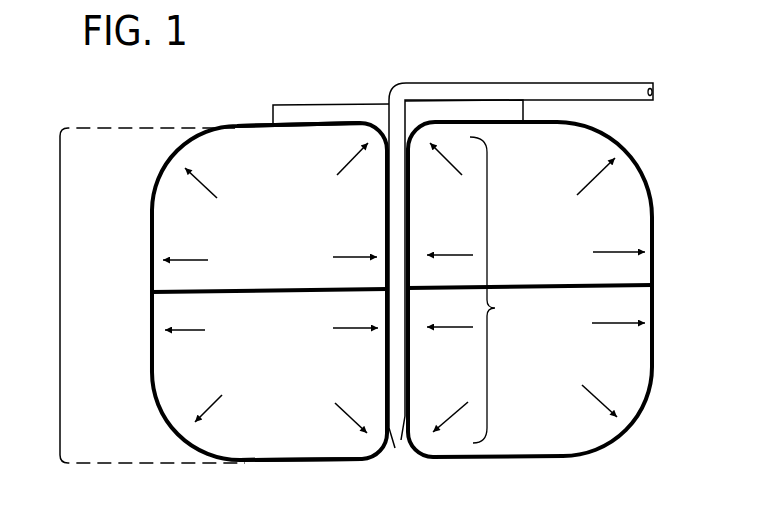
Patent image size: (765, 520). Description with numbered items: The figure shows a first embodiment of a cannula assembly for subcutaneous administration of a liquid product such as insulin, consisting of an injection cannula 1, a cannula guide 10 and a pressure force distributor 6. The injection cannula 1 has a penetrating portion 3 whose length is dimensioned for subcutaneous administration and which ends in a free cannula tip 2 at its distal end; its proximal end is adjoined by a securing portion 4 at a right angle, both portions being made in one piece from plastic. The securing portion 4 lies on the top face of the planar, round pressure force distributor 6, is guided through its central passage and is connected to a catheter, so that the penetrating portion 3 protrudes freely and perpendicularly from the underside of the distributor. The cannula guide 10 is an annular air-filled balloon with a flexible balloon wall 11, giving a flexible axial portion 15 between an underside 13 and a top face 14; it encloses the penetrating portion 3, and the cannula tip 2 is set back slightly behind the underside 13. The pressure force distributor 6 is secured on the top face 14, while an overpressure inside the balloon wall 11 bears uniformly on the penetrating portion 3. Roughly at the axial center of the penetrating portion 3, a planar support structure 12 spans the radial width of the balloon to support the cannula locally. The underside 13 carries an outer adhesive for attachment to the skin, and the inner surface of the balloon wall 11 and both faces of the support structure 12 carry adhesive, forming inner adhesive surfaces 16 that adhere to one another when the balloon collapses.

The injection cannula 1 is at (396, 206).
The cannula tip 2 is at (400, 438).
The penetrating portion 3 is at (493, 290).
The securing portion 4 is at (465, 99).
The pressure force distributor 6 is at (341, 112).
The cannula guide 10 is at (248, 459).
The balloon wall 11 is at (152, 198).
The support structure 12 is at (262, 294).
The underside 13 is at (316, 462).
The top face 14 is at (262, 114).
The flexible axial portion 15 is at (60, 298).
The inner adhesive surfaces 16 is at (525, 124).